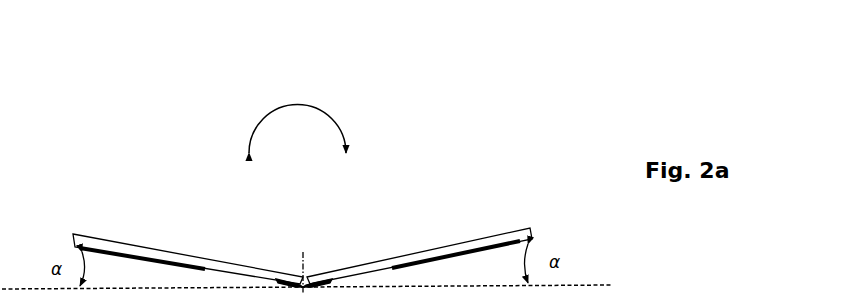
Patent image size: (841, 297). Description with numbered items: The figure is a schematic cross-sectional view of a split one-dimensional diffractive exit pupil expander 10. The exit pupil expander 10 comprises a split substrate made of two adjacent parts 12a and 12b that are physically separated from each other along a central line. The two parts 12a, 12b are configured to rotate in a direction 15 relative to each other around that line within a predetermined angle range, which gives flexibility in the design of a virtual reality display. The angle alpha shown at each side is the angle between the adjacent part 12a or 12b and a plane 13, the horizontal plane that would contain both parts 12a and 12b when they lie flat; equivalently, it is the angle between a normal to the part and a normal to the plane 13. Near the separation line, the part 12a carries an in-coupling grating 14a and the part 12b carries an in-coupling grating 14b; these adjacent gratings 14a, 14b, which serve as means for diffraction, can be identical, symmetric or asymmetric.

The split one-dimensional diffractive exit pupil expander 10 is at (373, 100).
The adjacent part 12a is at (120, 240).
The adjacent part 12b is at (478, 237).
The plane 13 is at (574, 285).
The in-coupling grating 14a is at (288, 276).
The in-coupling grating 14b is at (319, 278).
The direction of rotation 15 is at (254, 127).